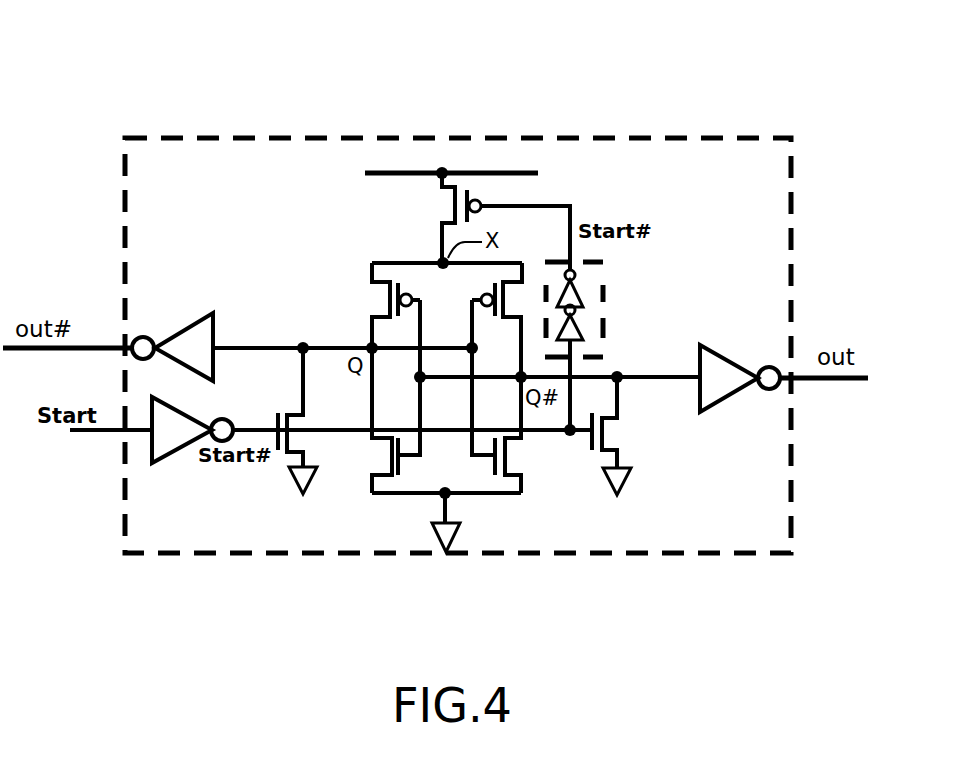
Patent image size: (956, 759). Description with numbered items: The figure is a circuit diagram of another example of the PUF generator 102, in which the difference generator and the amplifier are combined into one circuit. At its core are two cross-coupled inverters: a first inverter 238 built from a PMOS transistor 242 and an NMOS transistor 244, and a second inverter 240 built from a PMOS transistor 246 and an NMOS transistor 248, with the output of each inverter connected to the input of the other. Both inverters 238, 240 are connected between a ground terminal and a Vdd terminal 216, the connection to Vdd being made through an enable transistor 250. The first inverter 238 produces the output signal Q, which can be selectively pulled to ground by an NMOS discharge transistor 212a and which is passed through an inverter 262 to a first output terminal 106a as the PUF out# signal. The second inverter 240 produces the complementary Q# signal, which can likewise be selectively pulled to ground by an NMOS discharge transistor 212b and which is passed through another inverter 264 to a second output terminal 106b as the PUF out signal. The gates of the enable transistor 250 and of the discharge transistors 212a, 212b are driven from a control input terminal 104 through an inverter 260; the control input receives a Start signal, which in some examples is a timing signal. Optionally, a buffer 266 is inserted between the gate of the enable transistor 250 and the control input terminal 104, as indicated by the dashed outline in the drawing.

The PUF generator 102 is at (266, 84).
The Vdd terminal 216 is at (477, 172).
The enable transistor 250 is at (443, 222).
The PMOS transistor 242 is at (376, 280).
The PMOS transistor 246 is at (490, 292).
The NMOS transistor 244 is at (372, 480).
The NMOS transistor 248 is at (522, 470).
The first inverter 238 is at (361, 398).
The second inverter 240 is at (515, 403).
The NMOS discharge transistor 212a is at (278, 412).
The NMOS discharge transistor 212b is at (619, 449).
The inverter 262 is at (190, 326).
The inverter 264 is at (713, 403).
The inverter 260 is at (158, 460).
The control input terminal 104 is at (111, 436).
The first output terminal 106a is at (95, 352).
The second output terminal 106b is at (806, 385).
The buffer 266 is at (605, 323).